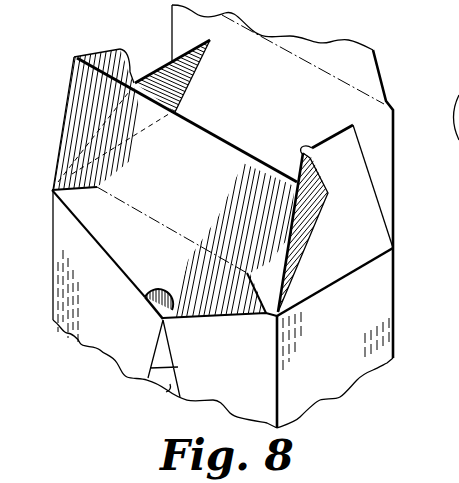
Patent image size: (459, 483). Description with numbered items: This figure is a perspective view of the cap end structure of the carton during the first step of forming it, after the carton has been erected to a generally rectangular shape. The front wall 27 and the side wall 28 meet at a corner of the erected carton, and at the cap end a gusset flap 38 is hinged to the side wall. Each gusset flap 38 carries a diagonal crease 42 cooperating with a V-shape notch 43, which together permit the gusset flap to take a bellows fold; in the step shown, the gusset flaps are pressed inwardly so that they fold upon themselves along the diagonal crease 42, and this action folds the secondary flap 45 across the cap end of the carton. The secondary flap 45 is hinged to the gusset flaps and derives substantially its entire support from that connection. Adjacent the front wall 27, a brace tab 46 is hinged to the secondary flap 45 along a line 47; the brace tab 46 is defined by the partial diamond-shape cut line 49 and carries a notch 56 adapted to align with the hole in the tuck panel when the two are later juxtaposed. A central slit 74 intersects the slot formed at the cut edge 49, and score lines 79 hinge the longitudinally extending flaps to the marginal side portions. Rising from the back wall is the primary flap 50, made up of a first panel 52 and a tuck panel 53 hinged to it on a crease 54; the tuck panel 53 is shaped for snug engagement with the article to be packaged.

The front wall 27 is at (128, 358).
The side wall 28 is at (338, 386).
The gusset flap 38 is at (167, 66).
The diagonal crease 42 is at (90, 133).
The V-shape notch 43 is at (129, 68).
The secondary flap 45 is at (183, 194).
The brace tab 46 is at (164, 252).
The hinge line 47 is at (171, 228).
The partial diamond-shape cut line 49 is at (152, 305).
The primary flap 50 is at (447, 77).
The first panel 52 is at (389, 146).
The tuck panel 53 is at (344, 58).
The crease 54 is at (296, 58).
The notch 56 is at (156, 284).
The central slit 74 is at (169, 388).
The score lines 79 is at (178, 375).